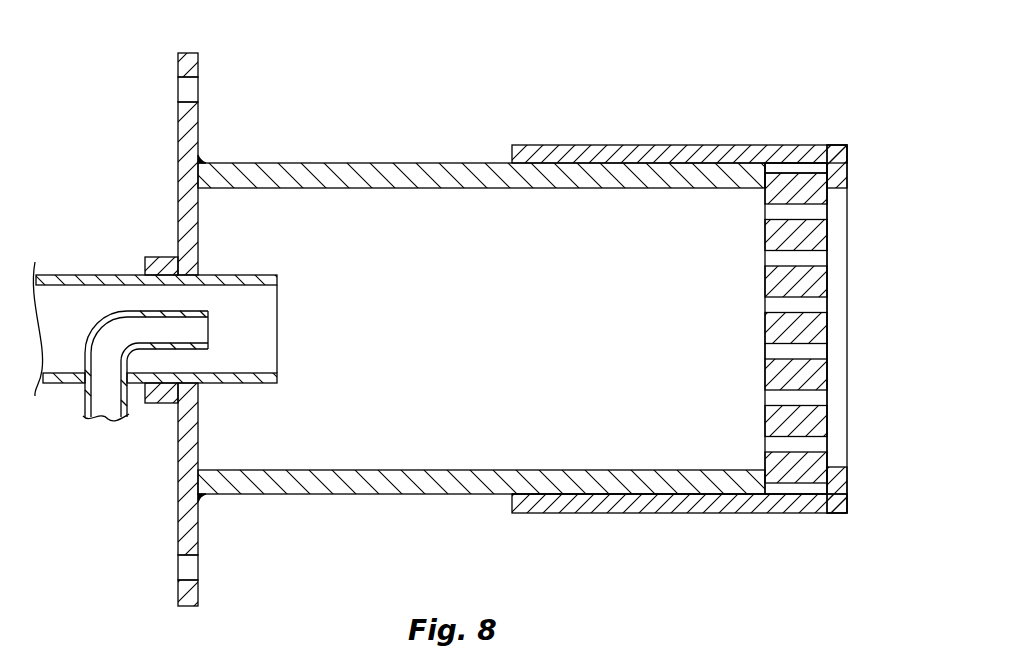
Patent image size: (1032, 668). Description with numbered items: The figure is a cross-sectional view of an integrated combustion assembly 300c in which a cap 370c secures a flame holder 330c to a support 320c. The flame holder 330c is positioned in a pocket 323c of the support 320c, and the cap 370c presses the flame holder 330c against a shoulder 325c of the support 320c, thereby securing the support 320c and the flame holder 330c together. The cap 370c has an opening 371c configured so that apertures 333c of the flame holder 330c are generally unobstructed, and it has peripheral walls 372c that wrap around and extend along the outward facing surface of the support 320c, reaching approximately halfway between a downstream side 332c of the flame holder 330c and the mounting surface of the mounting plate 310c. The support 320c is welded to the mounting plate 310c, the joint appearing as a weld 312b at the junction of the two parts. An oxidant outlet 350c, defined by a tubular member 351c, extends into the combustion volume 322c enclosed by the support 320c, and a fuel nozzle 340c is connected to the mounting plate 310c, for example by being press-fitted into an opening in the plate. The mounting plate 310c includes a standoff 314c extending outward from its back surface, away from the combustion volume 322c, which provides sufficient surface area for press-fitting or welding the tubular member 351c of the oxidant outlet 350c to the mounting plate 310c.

The integrated combustion assembly 300c is at (848, 47).
The mounting plate 310c is at (176, 143).
The weld fillet 312b is at (205, 153).
The standoff 314c is at (153, 255).
The support 320c is at (460, 162).
The combustion volume 322c is at (533, 340).
The pocket 323c is at (799, 165).
The shoulder 325c is at (762, 181).
The flame holder 330c is at (813, 286).
The downstream side 332c is at (830, 378).
The apertures 333c is at (830, 352).
The fuel nozzle 340c is at (161, 349).
The oxidant outlet 350c is at (280, 293).
The tubular member 351c is at (258, 377).
The cap 370c is at (597, 145).
The opening 371c is at (842, 186).
The peripheral walls 372c is at (664, 497).